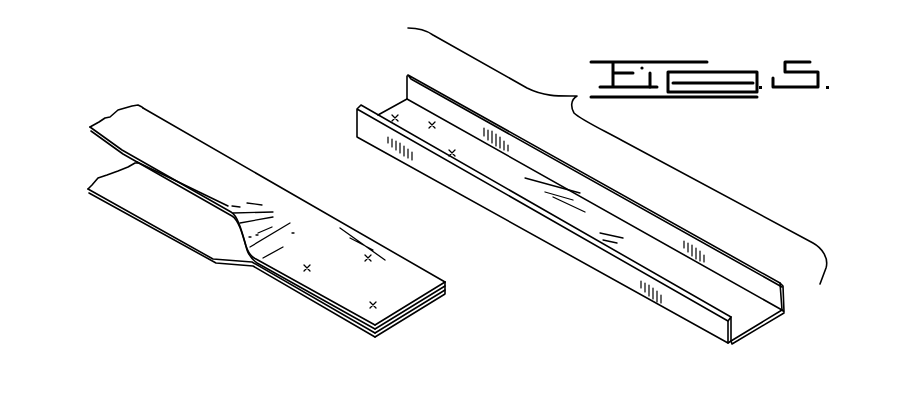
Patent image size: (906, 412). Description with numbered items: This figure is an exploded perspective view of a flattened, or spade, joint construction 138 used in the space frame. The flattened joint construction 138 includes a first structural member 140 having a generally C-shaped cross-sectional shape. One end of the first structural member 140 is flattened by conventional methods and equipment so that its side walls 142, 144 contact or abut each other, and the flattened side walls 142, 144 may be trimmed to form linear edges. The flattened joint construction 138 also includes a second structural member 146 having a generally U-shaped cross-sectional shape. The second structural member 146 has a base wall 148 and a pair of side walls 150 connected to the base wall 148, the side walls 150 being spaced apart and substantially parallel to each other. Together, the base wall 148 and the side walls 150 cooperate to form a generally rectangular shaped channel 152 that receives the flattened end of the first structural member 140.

The flattened joint construction 138 is at (262, 104).
The first structural member 140 is at (145, 108).
The side wall 142 is at (407, 298).
The side wall 144 is at (413, 305).
The second structural member 146 is at (603, 220).
The base wall 148 is at (745, 334).
The side walls 150 is at (728, 325).
The channel 152 is at (740, 309).